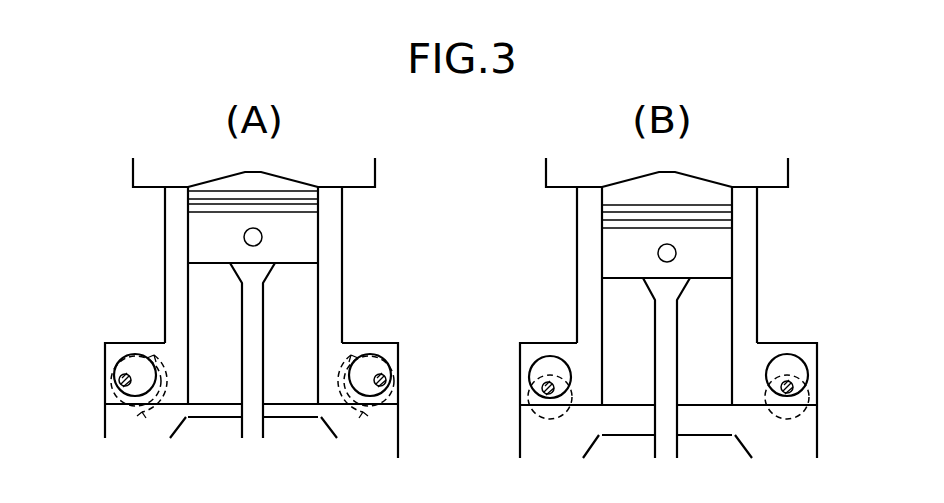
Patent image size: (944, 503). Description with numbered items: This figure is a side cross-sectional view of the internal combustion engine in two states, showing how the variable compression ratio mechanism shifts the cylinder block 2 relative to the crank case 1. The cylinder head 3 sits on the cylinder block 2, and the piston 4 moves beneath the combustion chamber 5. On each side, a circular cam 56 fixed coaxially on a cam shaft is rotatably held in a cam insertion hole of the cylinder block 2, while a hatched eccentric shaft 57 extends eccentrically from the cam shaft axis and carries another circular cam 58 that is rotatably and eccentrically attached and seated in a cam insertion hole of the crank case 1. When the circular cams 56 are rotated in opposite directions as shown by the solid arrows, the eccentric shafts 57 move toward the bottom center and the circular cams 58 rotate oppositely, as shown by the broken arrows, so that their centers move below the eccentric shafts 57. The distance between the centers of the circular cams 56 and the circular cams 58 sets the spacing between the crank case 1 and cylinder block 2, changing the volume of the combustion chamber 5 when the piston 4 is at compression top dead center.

The crank case 1 is at (383, 438).
The cylinder block 2 is at (333, 262).
The cylinder head 3 is at (360, 173).
The piston 4 is at (205, 235).
The combustion chamber 5 is at (243, 182).
The circular cam 56 is at (138, 354).
The eccentric shaft 57 is at (122, 372).
The circular cam 58 is at (106, 418).